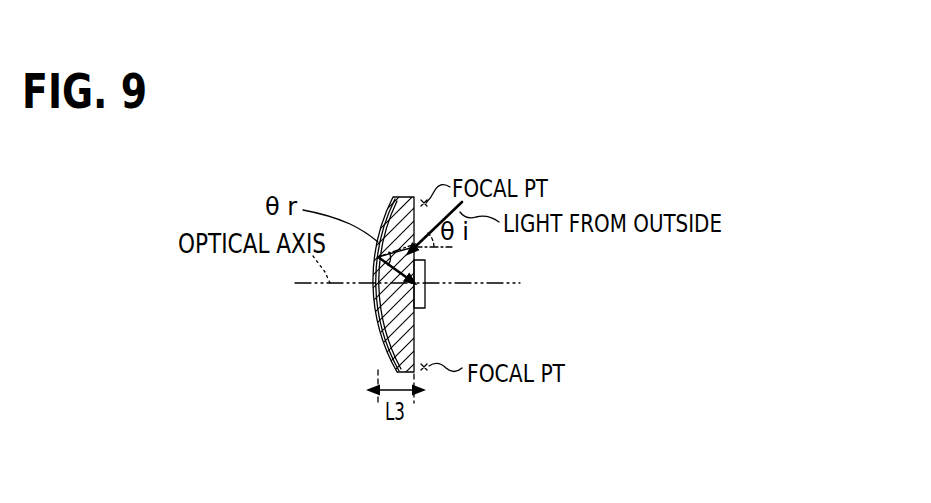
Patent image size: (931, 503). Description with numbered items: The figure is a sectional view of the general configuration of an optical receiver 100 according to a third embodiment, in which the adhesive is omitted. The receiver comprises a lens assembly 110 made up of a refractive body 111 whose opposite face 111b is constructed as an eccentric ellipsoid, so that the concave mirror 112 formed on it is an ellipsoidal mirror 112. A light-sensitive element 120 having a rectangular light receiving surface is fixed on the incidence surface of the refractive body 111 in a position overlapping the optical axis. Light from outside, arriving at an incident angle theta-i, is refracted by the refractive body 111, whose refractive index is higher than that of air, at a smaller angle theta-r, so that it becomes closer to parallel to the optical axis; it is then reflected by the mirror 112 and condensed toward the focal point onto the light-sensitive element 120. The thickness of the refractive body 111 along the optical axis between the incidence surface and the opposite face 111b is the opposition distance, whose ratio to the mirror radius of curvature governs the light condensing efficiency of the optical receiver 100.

The optical receiver 100 is at (460, 151).
The lens 110 is at (432, 140).
The refractive body 111 is at (411, 196).
The concave mirror 112 is at (391, 198).
The opposite face 111b is at (375, 255).
The light-sensitive element 120 is at (427, 268).